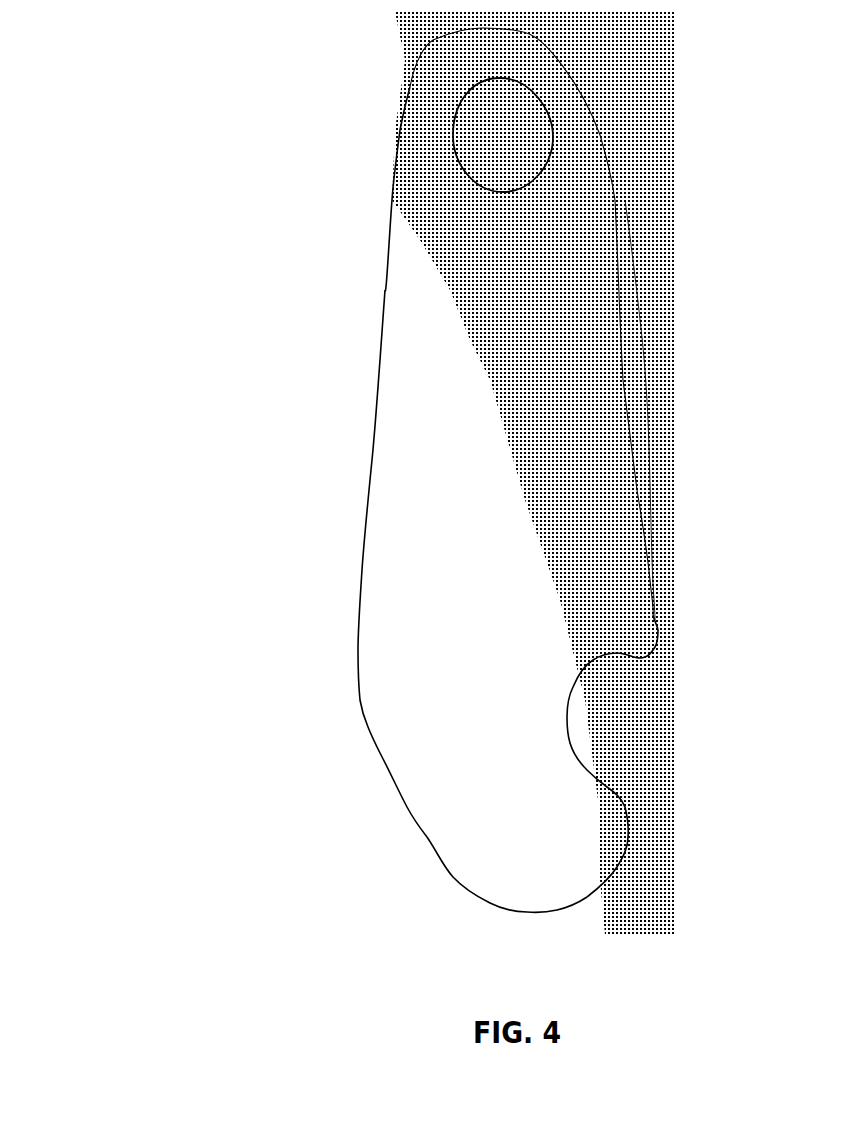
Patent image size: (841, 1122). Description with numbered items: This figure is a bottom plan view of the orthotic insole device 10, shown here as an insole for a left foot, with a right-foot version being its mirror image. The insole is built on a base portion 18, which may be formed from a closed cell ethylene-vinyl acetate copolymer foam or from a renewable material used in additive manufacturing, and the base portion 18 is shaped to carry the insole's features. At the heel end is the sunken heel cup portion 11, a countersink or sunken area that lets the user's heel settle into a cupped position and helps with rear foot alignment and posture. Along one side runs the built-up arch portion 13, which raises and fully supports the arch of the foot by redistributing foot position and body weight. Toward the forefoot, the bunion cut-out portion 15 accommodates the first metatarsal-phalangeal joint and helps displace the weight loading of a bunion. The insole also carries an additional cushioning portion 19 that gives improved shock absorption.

The orthotic insole device 10 is at (172, 98).
The sunken heel cup portion 11 is at (553, 137).
The built-up arch portion 13 is at (640, 390).
The bunion cut-out portion 15 is at (595, 708).
The base portion 18 is at (428, 360).
The additional cushioning portion 19 is at (477, 728).